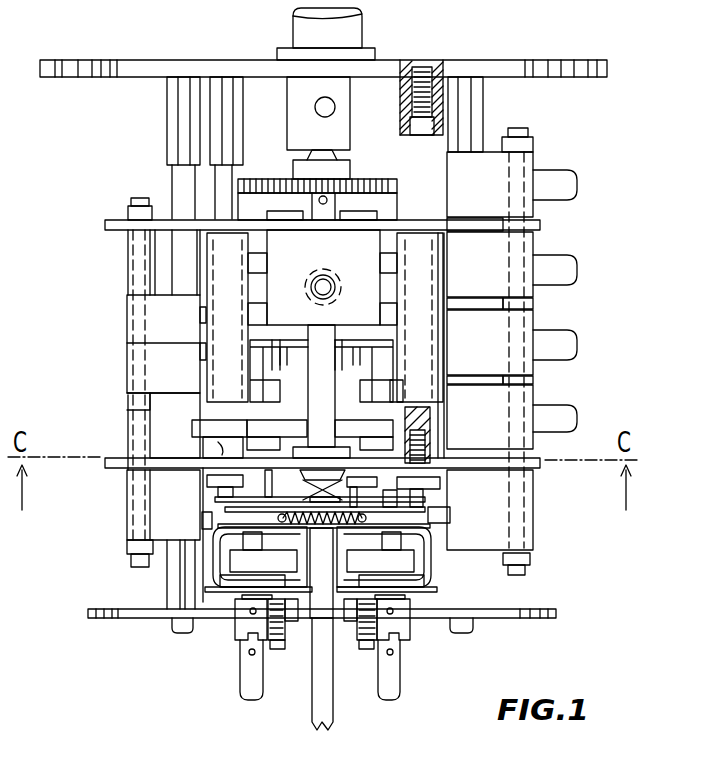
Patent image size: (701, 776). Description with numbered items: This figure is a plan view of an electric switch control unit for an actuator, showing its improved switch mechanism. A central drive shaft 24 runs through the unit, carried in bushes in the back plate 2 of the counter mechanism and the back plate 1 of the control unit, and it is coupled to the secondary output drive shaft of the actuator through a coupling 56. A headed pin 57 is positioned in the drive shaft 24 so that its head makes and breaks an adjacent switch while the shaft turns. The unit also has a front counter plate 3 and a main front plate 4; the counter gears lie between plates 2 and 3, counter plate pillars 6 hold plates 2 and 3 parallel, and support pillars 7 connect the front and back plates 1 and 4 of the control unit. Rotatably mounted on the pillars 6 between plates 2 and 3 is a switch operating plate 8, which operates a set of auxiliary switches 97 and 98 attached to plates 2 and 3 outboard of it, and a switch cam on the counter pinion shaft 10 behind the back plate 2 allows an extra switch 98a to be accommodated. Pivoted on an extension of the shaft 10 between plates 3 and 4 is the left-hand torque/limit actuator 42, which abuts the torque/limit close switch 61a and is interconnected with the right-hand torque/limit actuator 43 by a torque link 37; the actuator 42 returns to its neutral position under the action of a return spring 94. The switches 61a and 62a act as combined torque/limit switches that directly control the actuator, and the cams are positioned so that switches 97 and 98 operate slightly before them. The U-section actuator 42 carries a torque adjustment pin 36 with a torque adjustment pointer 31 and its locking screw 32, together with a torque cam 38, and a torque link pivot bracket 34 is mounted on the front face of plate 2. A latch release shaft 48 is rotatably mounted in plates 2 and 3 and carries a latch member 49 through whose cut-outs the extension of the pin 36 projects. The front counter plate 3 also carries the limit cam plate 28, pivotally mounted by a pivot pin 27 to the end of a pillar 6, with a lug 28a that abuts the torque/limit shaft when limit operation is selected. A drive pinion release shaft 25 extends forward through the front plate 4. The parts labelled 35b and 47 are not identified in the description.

The back plate of the control unit 1 is at (597, 77).
The counter back plate 2 is at (525, 230).
The front counter plate 3 is at (505, 468).
The main front plate 4 is at (547, 609).
The counter plate pillars 6 is at (127, 268).
The support pillars 7 is at (183, 132).
The switch operating plate 8 is at (218, 418).
The counter pinion shaft 10 is at (247, 673).
The central drive shaft 24 is at (297, 125).
The drive pinion release shaft 25 is at (317, 690).
The pivot pin 27 is at (428, 466).
The limit cam plate 28 is at (220, 448).
The lug 28a is at (153, 505).
The torque adjustment pointer 31 is at (233, 627).
The torque adjustment locking screw 32 is at (278, 643).
The torque link pivot bracket 34 is at (367, 282).
The support block 35b is at (163, 505).
The torque adjustment pin 36 is at (400, 542).
The torque link 37 is at (430, 532).
The torque cam 38 is at (397, 565).
The torque/limit actuator 42 is at (212, 555).
The right-hand torque/limit actuator 43 is at (405, 560).
The rack 47 is at (292, 187).
The latch release shaft 48 is at (327, 218).
The latch member 49 is at (403, 500).
The coupling 56 is at (362, 28).
The headed pin 57 is at (334, 112).
The torque/limit close switch 61a is at (107, 552).
The combined torque/limit switch 62a is at (497, 523).
The return spring 94 is at (303, 522).
The auxiliary switch 97 is at (157, 368).
The auxiliary switch 98 is at (493, 358).
The extra switch 98a is at (497, 173).